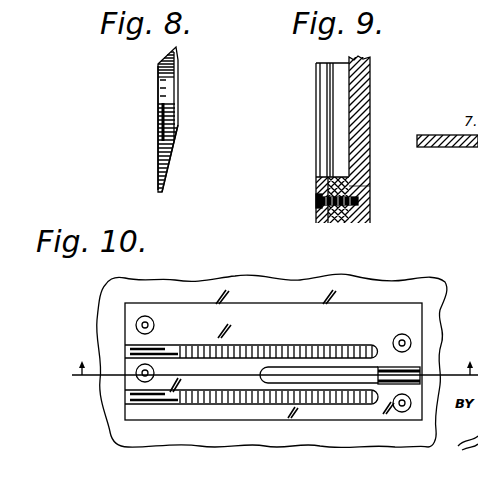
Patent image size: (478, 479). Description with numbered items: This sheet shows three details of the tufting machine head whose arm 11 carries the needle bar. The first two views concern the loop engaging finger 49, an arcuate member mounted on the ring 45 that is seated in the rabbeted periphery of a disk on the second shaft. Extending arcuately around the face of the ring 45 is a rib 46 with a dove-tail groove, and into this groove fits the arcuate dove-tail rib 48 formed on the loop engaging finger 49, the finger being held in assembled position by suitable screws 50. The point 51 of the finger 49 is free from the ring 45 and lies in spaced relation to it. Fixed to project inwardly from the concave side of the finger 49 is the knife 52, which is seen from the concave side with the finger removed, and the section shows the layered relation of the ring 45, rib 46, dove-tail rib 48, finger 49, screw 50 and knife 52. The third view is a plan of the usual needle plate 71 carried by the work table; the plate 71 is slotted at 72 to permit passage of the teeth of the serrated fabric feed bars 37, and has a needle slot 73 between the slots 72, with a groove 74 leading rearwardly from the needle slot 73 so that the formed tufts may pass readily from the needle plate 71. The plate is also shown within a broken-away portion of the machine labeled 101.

In FIG. 10, the arm 11 is at (263, 372).
In FIG. 10, the fabric feed bars 37 is at (284, 330).
In FIG. 9, the ring 45 is at (366, 95).
In FIG. 9, the rib 46 is at (350, 176).
In FIG. 8, the dove-tail rib 48 is at (180, 99).
In FIG. 9, the dove-tail rib 48 is at (345, 194).
In FIG. 8, the loop engaging finger 49 is at (157, 81).
In FIG. 9, the loop engaging finger 49 is at (318, 146).
In FIG. 9, the screws 50 is at (318, 201).
In FIG. 8, the point 51 is at (166, 174).
In FIG. 8, the knife 52 is at (161, 127).
In FIG. 9, the knife 52 is at (330, 108).
In FIG. 10, the needle plate 71 is at (167, 316).
In FIG. 10, the slots 72 is at (195, 345).
In FIG. 10, the needle slot 73 is at (313, 373).
In FIG. 10, the groove 74 is at (421, 365).
In FIG. 10, the housing 101 is at (418, 284).